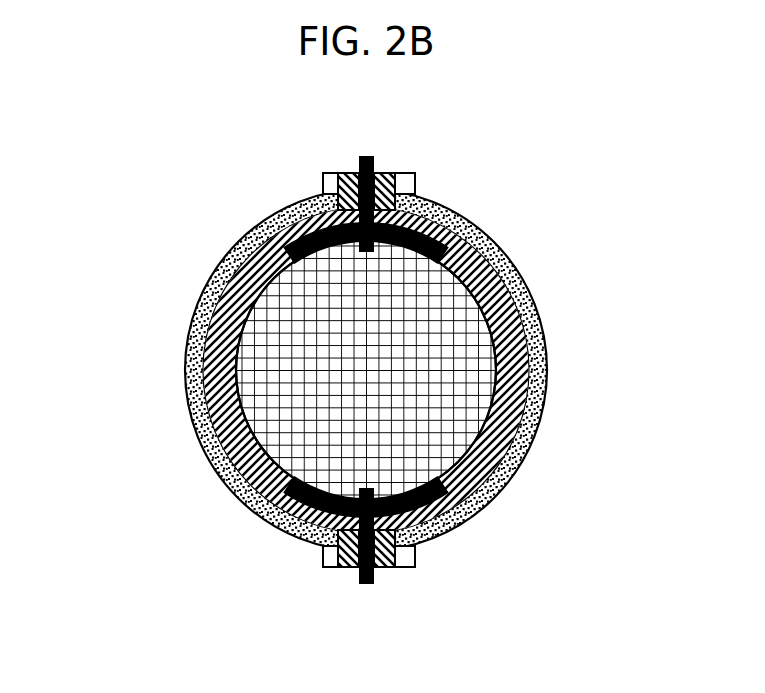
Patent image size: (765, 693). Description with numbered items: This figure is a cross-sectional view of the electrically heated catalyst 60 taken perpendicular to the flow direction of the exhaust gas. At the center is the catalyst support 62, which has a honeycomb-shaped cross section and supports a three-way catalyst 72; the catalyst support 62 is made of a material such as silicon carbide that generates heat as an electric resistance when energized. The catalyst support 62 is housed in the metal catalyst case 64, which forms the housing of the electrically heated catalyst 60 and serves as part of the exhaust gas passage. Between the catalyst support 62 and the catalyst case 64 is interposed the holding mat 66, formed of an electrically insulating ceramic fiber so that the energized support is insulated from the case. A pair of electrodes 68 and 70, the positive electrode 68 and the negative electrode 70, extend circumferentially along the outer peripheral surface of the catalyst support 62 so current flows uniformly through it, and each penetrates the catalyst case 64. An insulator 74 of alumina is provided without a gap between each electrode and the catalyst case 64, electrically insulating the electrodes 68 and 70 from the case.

The electrically heated catalyst 60 is at (373, 369).
The catalyst support 62 is at (228, 318).
The catalyst case 64 is at (530, 300).
The holding mat 66 is at (535, 357).
The electrode 68 is at (357, 150).
The electrode 70 is at (350, 577).
The three-way catalyst 72 is at (273, 312).
The insulator 74 is at (378, 165).